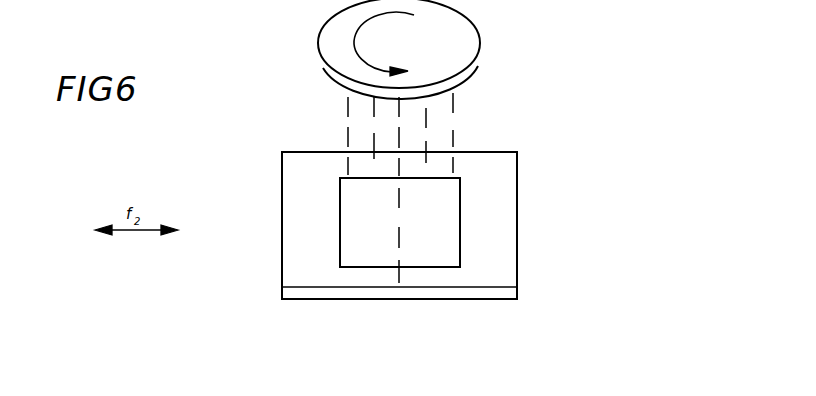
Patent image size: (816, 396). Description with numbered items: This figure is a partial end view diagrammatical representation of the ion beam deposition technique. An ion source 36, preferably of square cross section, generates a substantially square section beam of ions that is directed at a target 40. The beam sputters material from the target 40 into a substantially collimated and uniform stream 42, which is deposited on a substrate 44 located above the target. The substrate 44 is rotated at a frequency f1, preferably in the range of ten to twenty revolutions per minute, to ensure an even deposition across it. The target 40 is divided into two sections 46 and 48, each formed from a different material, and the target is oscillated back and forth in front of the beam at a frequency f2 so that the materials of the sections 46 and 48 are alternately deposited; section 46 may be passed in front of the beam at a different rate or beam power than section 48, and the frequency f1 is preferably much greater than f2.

The ion source 36 is at (430, 255).
The target 40 is at (473, 300).
The stream 42 is at (440, 122).
The substrate 44 is at (467, 31).
The section 46 is at (318, 270).
The section 48 is at (500, 231).